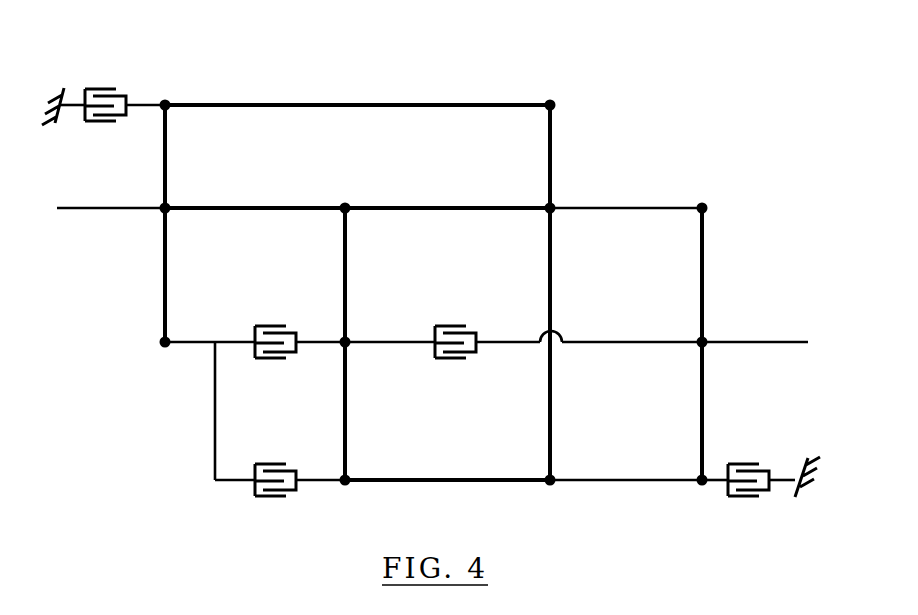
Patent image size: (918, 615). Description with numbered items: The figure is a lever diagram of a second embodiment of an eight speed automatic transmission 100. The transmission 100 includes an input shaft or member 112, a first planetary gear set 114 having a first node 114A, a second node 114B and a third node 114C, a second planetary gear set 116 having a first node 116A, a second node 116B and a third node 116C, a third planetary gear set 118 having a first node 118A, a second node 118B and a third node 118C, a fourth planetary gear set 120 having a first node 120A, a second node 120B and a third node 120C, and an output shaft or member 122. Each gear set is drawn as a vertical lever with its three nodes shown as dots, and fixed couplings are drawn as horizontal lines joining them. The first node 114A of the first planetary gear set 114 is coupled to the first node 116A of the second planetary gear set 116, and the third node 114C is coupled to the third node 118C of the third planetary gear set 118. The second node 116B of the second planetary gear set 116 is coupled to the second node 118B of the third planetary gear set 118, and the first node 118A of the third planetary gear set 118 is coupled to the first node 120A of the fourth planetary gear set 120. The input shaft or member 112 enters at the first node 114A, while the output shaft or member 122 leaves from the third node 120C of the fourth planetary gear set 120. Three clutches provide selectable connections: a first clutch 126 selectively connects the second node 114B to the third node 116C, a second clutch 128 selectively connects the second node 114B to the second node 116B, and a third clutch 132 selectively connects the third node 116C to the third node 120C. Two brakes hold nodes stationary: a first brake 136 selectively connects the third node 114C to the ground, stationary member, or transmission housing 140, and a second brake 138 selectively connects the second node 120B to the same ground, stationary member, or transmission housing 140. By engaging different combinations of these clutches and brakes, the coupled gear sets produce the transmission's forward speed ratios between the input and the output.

The eight speed automatic transmission 100 is at (704, 100).
The input shaft or member 112 is at (118, 212).
The first planetary gear set 114 is at (122, 416).
The first node 114A is at (168, 205).
The second node 114B is at (162, 345).
The third node 114C is at (168, 103).
The second planetary gear set 116 is at (338, 501).
The first node 116A is at (348, 206).
The second node 116B is at (348, 478).
The third node 116C is at (348, 345).
The third planetary gear set 118 is at (545, 500).
The first node 118A is at (553, 206).
The second node 118B is at (547, 478).
The third node 118C is at (553, 103).
The fourth planetary gear set 120 is at (678, 497).
The first node 120A is at (705, 206).
The second node 120B is at (700, 478).
The third node 120C is at (700, 340).
The output shaft or member 122 is at (740, 345).
The first clutch 126 is at (278, 360).
The second clutch 128 is at (277, 497).
The third clutch 132 is at (440, 326).
The first brake 136 is at (100, 89).
The second brake 138 is at (738, 497).
The ground, stationary member, or transmission housing 140 is at (66, 114).